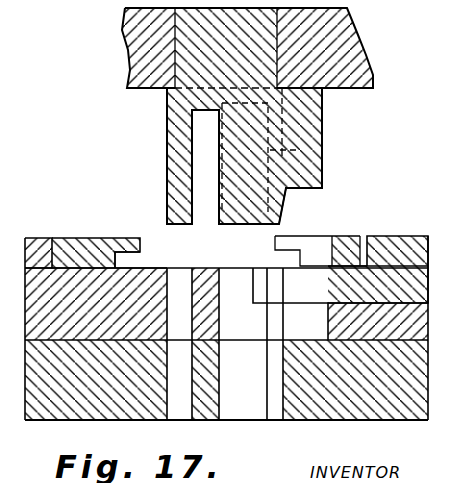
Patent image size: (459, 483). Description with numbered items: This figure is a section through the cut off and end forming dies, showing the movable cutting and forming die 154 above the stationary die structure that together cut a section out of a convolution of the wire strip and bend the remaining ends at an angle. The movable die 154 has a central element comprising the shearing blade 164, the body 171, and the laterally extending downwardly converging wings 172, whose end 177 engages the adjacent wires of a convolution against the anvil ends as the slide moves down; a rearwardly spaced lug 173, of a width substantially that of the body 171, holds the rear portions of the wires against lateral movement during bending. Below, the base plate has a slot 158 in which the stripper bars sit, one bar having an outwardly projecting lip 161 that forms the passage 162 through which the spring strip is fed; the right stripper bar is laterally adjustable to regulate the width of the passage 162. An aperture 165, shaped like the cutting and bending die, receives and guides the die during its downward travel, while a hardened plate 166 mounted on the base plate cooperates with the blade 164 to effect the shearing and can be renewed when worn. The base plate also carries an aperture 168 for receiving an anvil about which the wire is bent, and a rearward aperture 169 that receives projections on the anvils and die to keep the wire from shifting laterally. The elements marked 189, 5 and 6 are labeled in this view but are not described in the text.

The movable cutting and forming die 154 is at (363, 32).
The shearing blade 164 is at (315, 134).
The rearwardly spaced lug 173 is at (172, 165).
The laterally extending downwardly converging wings 172 is at (293, 153).
The body 171 is at (260, 180).
The end of the wings 177 is at (320, 196).
The aperture 165 is at (313, 243).
The hardened plate 166 is at (388, 236).
The left stop block 189 is at (72, 238).
The outwardly projecting lip 161 is at (127, 238).
The passage 162 is at (140, 258).
The die plate 5 is at (32, 303).
The slot 158 is at (150, 262).
The aperture 169 is at (172, 270).
The aperture 168 is at (240, 278).
The base plate 6 is at (38, 385).